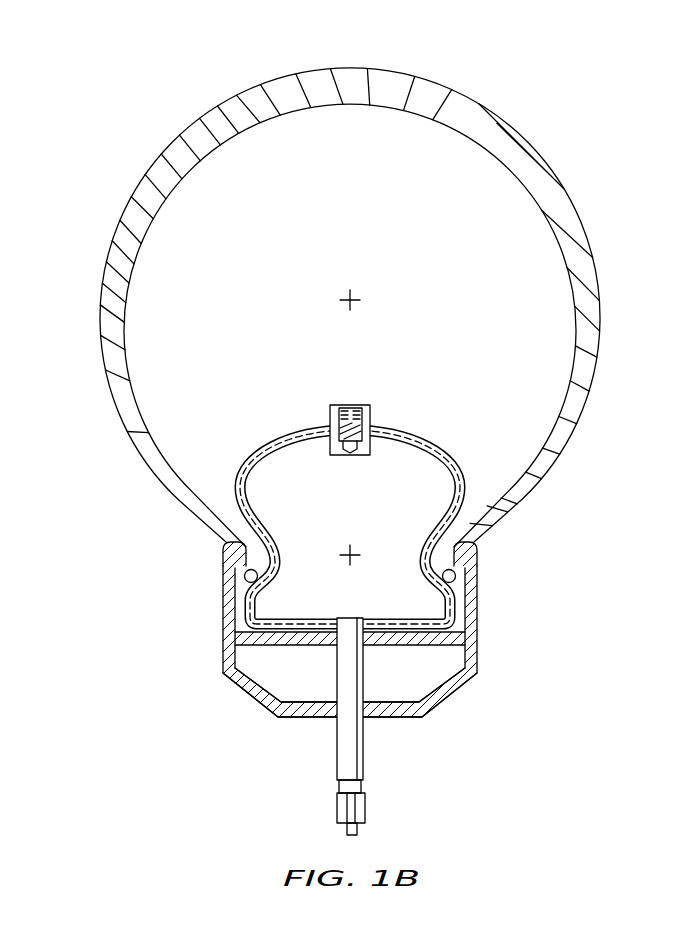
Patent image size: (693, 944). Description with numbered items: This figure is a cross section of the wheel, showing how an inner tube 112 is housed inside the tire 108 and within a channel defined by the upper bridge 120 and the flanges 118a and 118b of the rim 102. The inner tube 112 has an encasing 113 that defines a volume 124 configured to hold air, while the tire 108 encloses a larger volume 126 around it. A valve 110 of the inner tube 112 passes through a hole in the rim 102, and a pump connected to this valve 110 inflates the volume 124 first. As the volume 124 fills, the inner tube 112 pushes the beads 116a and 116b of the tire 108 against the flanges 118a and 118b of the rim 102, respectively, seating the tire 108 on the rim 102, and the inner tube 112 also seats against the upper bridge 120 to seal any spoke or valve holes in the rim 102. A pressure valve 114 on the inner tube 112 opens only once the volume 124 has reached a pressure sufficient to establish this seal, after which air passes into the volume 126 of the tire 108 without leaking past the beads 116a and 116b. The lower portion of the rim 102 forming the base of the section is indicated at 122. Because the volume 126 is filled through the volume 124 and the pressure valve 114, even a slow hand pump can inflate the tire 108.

The rim 102 is at (350, 642).
The tire 108 is at (214, 118).
The valve 110 is at (337, 760).
The inner tube 112 is at (263, 429).
The encasing 113 is at (277, 450).
The pressure valve 114 is at (372, 420).
The bead 116a is at (458, 572).
The bead 116b is at (243, 572).
The flange 118a is at (476, 593).
The flange 118b is at (226, 593).
The upper bridge 120 is at (411, 640).
The hub shell 122 is at (443, 694).
The volume 124 is at (358, 550).
The volume 126 is at (358, 298).